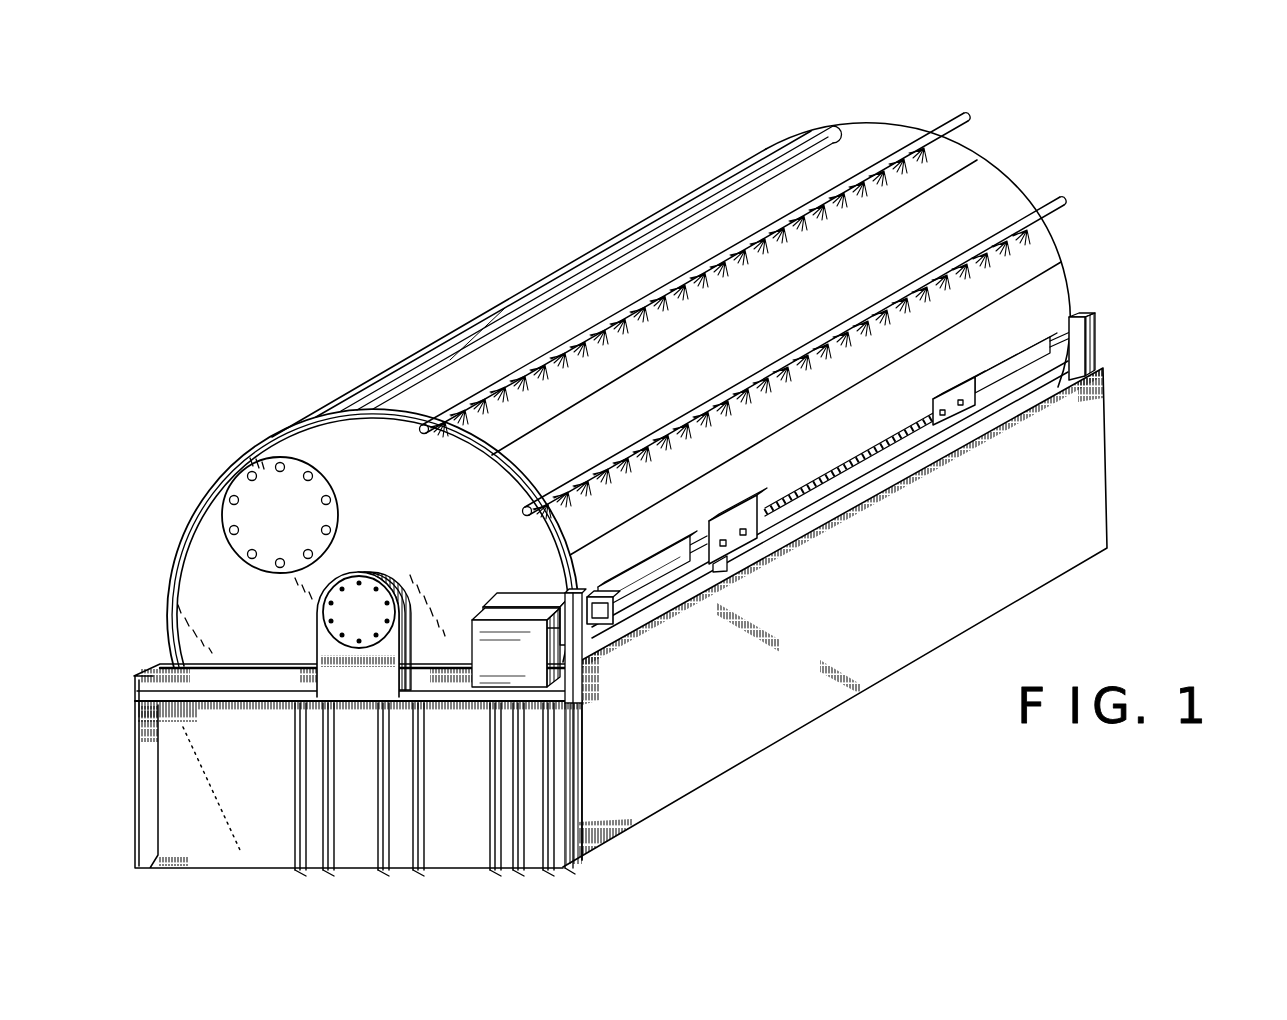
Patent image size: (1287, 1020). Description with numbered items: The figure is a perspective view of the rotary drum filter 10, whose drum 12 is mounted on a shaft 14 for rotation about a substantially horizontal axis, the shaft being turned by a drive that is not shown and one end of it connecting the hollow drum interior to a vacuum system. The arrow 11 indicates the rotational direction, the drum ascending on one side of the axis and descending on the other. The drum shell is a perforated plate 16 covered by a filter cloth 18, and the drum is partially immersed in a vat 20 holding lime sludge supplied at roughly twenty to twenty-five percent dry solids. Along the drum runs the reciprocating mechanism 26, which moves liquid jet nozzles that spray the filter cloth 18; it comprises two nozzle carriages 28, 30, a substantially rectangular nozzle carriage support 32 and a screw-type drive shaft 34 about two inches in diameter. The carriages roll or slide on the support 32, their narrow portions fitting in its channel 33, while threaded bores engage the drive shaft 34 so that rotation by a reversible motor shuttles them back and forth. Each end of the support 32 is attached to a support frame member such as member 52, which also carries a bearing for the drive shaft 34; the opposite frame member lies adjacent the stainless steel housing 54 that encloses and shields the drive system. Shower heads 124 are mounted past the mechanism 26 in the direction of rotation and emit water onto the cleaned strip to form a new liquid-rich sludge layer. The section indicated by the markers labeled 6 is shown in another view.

The rotary drum filter 10 is at (443, 268).
The arrow 11 is at (457, 513).
The drum 12 is at (270, 639).
The shaft 14 is at (407, 587).
The perforated plate 16 is at (179, 576).
The filter cloth 18 is at (290, 412).
The vat 20 is at (265, 771).
The reciprocating mechanism 26 is at (820, 465).
The nozzle carriage 28 is at (750, 548).
The nozzle carriage 30 is at (973, 418).
The nozzle carriage support 32 is at (640, 566).
The channel 33 is at (612, 626).
The screw-type drive shaft 34 is at (857, 489).
The support frame member 52 is at (1098, 335).
The housing 54 is at (581, 650).
The shower heads 124 is at (1060, 197).
The section line 6- 6 is at (1002, 23).